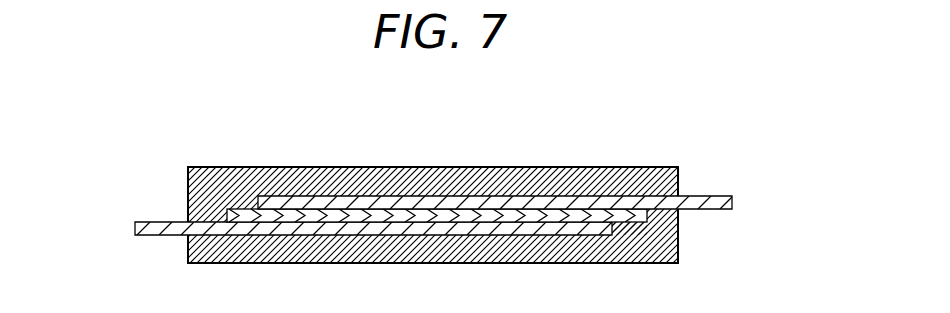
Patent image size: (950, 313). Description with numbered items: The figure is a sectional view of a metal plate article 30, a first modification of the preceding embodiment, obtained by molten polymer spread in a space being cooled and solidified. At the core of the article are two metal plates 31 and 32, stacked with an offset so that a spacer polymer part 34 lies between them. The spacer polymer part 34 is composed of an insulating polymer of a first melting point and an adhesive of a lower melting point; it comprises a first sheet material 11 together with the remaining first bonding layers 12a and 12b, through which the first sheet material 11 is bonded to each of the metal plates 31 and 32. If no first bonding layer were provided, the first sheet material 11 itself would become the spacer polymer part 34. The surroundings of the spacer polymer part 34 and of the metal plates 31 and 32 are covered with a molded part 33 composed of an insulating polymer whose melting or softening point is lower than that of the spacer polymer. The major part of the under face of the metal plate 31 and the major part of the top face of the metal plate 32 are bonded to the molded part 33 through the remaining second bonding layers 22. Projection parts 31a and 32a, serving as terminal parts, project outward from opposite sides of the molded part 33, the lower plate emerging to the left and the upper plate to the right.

The metal plate article 30 is at (430, 215).
The remaining second bonding layer 22 is at (572, 167).
The molded part 33 is at (435, 183).
The spacer polymer part 34 is at (652, 213).
The metal plate 31 is at (373, 242).
The projection part 31a is at (160, 222).
The remaining first bonding layer 12a is at (517, 233).
The first sheet material 11 is at (423, 221).
The metal plate 32 is at (512, 208).
The projection part 32a is at (713, 209).
The remaining first bonding layer 12b is at (500, 198).